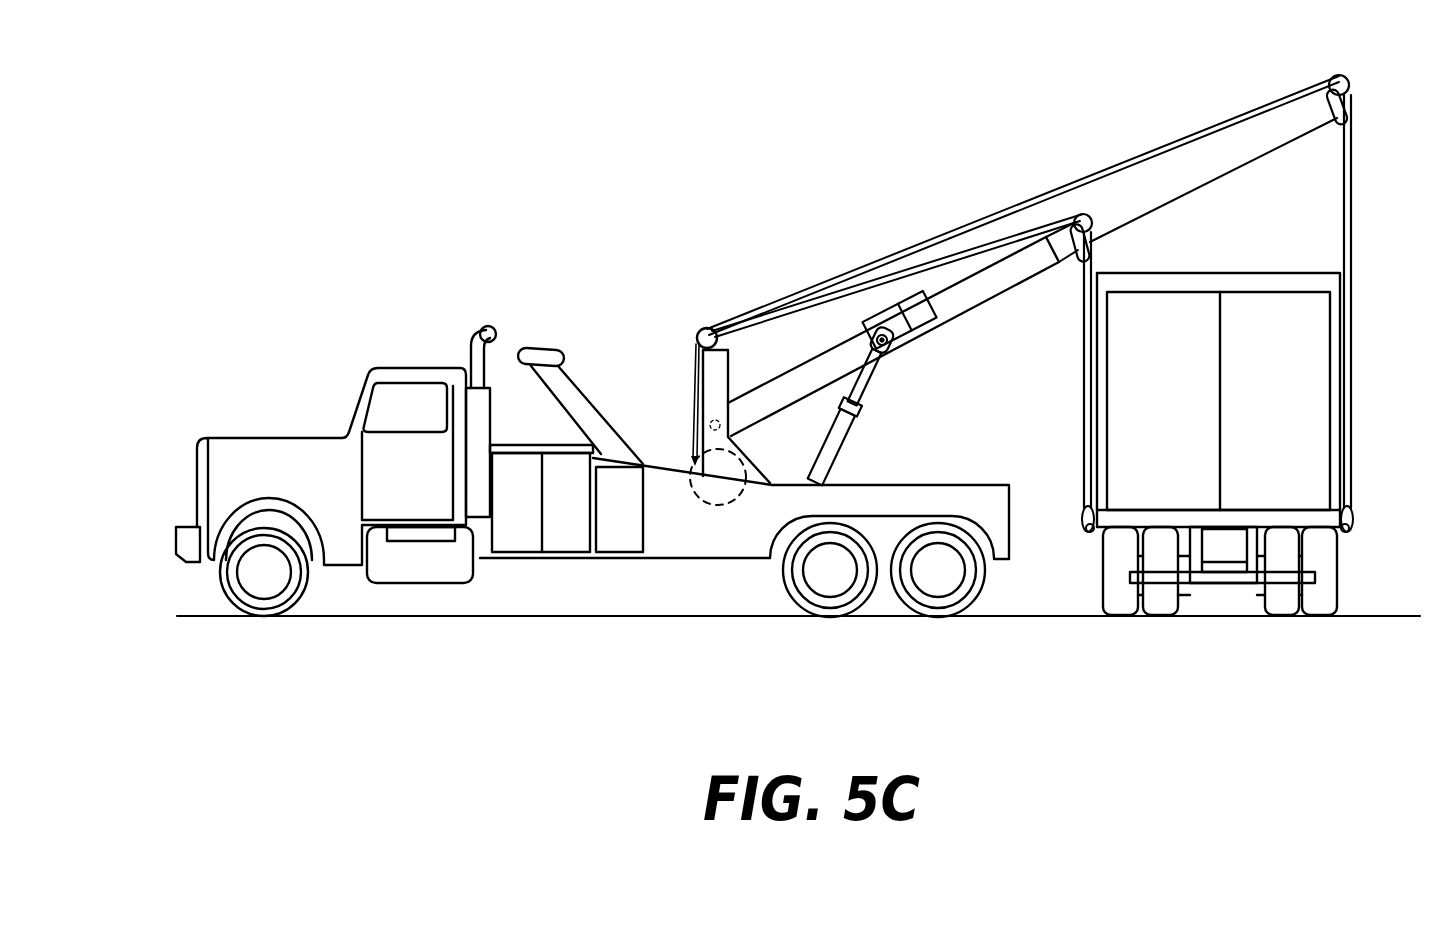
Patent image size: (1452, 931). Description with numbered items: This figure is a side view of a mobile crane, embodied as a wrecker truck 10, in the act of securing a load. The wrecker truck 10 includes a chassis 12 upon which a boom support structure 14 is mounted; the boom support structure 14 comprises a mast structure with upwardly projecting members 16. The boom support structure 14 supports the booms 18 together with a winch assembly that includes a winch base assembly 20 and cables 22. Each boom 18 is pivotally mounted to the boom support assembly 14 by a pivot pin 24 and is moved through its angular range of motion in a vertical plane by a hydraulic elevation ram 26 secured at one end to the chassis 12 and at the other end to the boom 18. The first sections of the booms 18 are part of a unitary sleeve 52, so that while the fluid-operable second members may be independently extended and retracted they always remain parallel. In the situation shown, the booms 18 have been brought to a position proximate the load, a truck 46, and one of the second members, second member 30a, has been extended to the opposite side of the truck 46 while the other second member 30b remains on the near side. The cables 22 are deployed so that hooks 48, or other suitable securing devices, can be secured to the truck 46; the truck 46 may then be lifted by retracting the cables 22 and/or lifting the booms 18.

The wrecker truck 10 is at (415, 303).
The chassis 12 is at (641, 559).
The boom support structure 14 is at (656, 360).
The upwardly projecting member 16 is at (710, 397).
The boom 18 is at (958, 260).
The winch base assembly 20 is at (718, 505).
The cable 22 is at (1044, 208).
The pivot pin 24 is at (705, 429).
The hydraulic elevation ram 26 is at (838, 445).
The second member 30a is at (1222, 174).
The second member 30b is at (1067, 262).
The truck 46 is at (1318, 355).
The hook 48 is at (1353, 509).
The unitary sleeve 52 is at (942, 312).